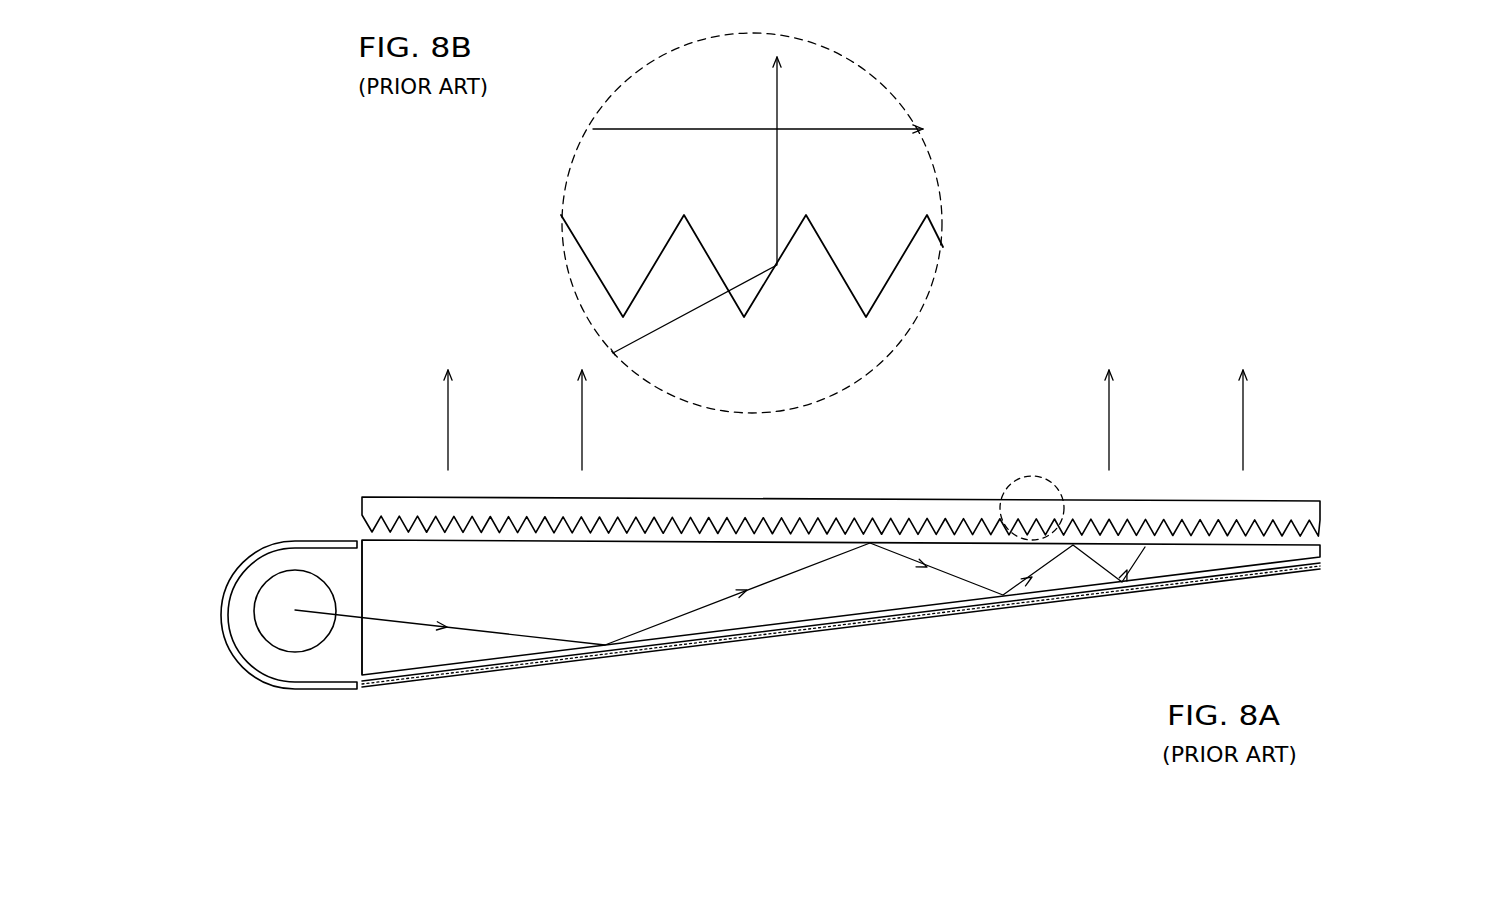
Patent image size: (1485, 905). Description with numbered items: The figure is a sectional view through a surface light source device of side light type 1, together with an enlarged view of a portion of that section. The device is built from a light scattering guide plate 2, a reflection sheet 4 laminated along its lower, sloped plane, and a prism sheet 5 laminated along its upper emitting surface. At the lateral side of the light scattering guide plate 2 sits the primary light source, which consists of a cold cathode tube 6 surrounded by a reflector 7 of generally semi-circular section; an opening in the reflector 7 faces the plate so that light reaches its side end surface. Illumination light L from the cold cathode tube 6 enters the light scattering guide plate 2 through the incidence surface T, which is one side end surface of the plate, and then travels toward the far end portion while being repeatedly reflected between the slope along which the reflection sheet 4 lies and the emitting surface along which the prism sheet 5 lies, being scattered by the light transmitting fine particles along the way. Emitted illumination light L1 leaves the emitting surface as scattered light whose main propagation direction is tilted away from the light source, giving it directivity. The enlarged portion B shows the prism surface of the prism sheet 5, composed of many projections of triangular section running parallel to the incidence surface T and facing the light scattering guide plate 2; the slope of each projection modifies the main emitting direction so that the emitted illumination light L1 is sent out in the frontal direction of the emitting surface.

In FIG. 8A, the surface light source device of side light type 1 is at (1123, 112).
In FIG. 8A, the light scattering guide plate 2 is at (808, 607).
In FIG. 8A, the reflection sheet 4 is at (972, 608).
In FIG. 8A, the prism sheet 5 is at (712, 502).
In FIG. 8B, the prism sheet 5 is at (895, 170).
In FIG. 8A, the cold cathode tube 6 is at (303, 640).
In FIG. 8A, the reflector 7 is at (238, 660).
In FIG. 8A, the incidence surface T is at (363, 605).
In FIG. 8A, the illumination light L is at (503, 635).
In FIG. 8A, the emitted illumination light L1 is at (1243, 442).
In FIG. 8B, the emitted illumination light L1 is at (710, 302).
In FIG. 8A, the enlarged region of prism sheet B is at (883, 387).